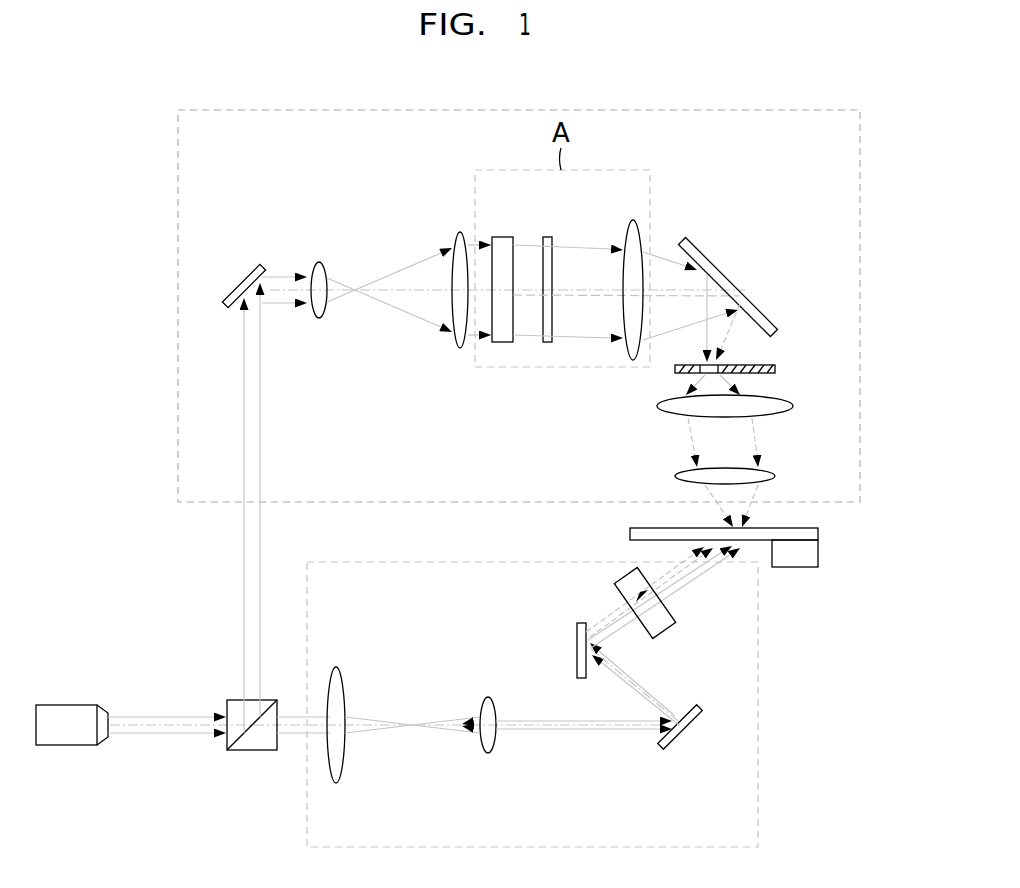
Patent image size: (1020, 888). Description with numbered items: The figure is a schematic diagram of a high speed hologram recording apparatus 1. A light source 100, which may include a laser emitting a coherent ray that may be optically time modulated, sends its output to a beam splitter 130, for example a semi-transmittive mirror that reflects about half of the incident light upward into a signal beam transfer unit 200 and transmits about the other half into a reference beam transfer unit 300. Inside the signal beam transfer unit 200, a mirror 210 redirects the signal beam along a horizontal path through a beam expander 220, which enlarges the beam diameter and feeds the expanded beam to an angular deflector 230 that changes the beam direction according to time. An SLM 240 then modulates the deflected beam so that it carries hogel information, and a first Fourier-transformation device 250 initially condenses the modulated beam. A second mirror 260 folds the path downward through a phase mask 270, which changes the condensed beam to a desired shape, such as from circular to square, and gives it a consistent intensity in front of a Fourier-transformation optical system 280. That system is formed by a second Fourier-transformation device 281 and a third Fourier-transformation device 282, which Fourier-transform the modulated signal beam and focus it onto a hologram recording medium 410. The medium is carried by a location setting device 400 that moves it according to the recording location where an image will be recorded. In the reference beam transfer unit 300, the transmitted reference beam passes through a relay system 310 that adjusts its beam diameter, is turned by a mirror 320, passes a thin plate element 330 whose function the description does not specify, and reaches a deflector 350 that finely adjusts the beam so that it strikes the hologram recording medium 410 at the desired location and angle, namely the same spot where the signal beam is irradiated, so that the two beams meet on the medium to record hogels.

The hologram recording apparatus 1 is at (121, 128).
The light source 100 is at (66, 706).
The beam splitter 130 is at (252, 755).
The signal beam transfer unit 200 is at (178, 325).
The mirror 210 is at (243, 283).
The beam expander 220 is at (462, 221).
The angular deflector 230 is at (503, 237).
The SLM 240 is at (548, 237).
The first Fourier-transformation device 250 is at (632, 223).
The mirror 260 is at (728, 277).
The phase mask 270 is at (775, 369).
The Fourier-transformation optical system 280 is at (731, 444).
The second Fourier-transformation device 281 is at (660, 405).
The third Fourier-transformation device 282 is at (675, 476).
The reference beam transfer unit 300 is at (760, 713).
The relay system 310 is at (497, 794).
The mirror 320 is at (682, 732).
The filter plate 330 is at (577, 651).
The deflector 350 is at (662, 635).
The location setting device 400 is at (820, 554).
The hologram recording medium 410 is at (630, 533).